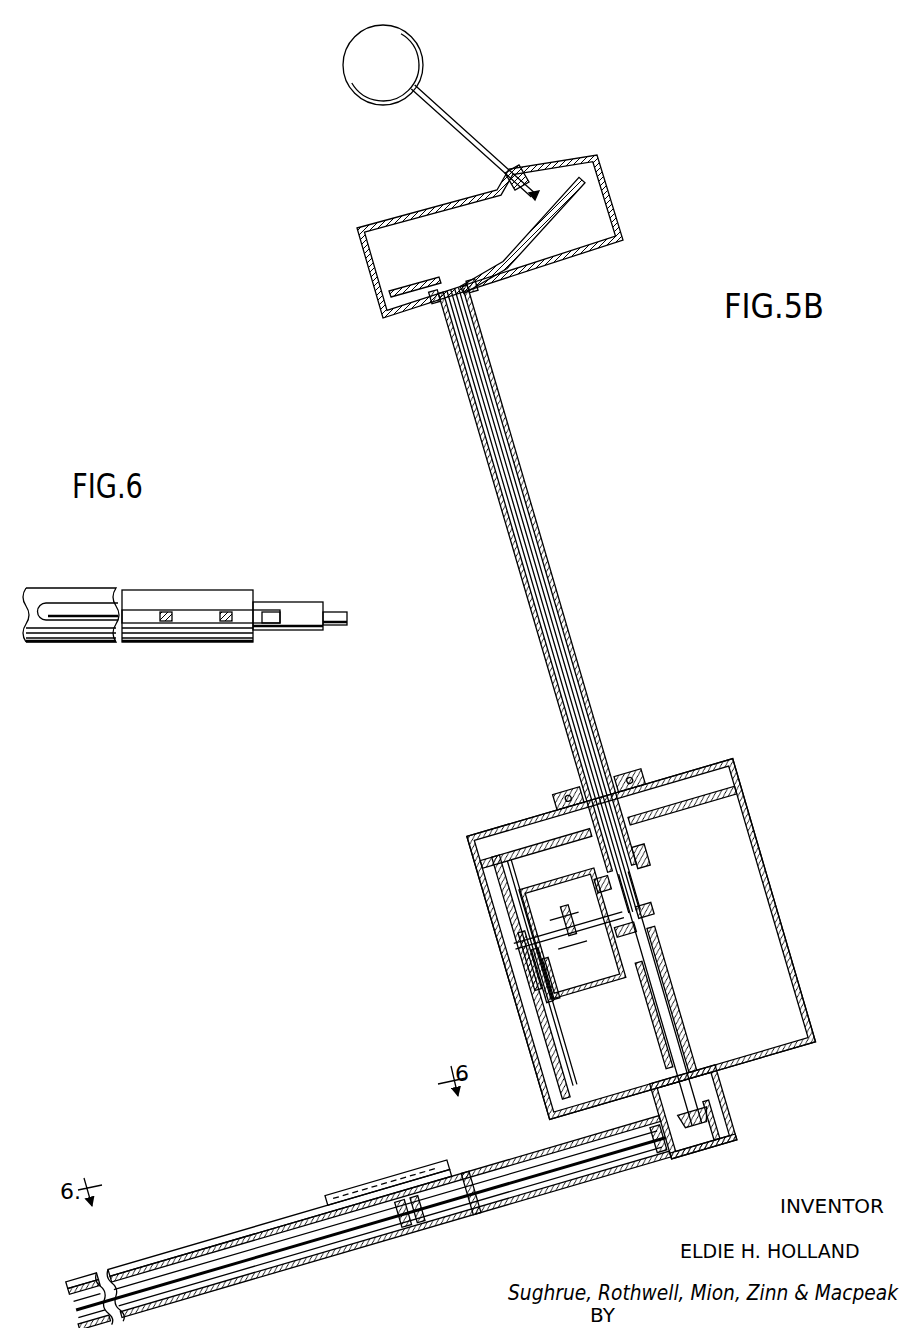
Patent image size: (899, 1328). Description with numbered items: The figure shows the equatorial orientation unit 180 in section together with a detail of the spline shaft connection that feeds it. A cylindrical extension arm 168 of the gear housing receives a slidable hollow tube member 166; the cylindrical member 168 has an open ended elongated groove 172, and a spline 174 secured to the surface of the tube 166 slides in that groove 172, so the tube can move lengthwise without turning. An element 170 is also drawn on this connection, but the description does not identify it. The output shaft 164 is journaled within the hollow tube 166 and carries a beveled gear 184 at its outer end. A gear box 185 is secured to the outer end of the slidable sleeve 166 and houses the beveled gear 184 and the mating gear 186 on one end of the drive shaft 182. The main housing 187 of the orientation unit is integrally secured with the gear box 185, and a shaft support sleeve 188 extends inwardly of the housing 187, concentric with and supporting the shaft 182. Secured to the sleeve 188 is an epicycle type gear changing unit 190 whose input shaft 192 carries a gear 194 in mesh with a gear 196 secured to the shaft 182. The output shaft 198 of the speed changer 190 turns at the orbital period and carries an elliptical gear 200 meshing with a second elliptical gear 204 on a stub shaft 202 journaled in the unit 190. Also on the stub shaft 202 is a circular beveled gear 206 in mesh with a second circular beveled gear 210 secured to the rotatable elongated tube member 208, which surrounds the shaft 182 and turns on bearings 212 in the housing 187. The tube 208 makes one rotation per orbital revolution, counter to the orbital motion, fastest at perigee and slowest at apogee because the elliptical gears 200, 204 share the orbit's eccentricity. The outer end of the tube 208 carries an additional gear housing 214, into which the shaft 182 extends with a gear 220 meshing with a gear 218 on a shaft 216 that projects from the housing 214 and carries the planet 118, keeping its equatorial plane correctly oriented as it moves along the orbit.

In FIG. 5B, the planet 118 is at (346, 74).
In FIG. 5B, the shaft 216 is at (466, 132).
In FIG. 5B, the additional gear housing 214 is at (366, 281).
In FIG. 5B, the gear 218 is at (548, 238).
In FIG. 5B, the gear 220 is at (405, 284).
In FIG. 5B, the rotatable elongated tube member 208 is at (534, 526).
In FIG. 5B, the drive shaft 182 is at (556, 601).
In FIG. 5B, the equatorial orientation unit 180 is at (477, 908).
In FIG. 5B, the main housing 187 is at (783, 913).
In FIG. 5B, the bearings 212 is at (638, 781).
In FIG. 5B, the second circular beveled gear 210 is at (648, 824).
In FIG. 5B, the circular beveled gear 206 is at (560, 1067).
In FIG. 5B, the epicycle type gear changing unit 190 is at (591, 1003).
In FIG. 5B, the stub shaft 202 is at (552, 967).
In FIG. 5B, the output shaft 198 is at (538, 934).
In FIG. 5B, the elliptical gear 200 is at (545, 968).
In FIG. 5B, the second elliptical gear 204 is at (548, 990).
In FIG. 5B, the gear 194 is at (631, 905).
In FIG. 5B, the gear 196 is at (666, 928).
In FIG. 5B, the input shaft 192 is at (640, 953).
In FIG. 5B, the shaft support sleeve 188 is at (684, 1014).
In FIG. 5B, the gear 186 is at (700, 1104).
In FIG. 5B, the beveled gear 184 is at (718, 1125).
In FIG. 5B, the gear box 185 is at (700, 1150).
In FIG. 5B, the cylindrical extension arm 168 is at (268, 1285).
In FIG. 6, the cylindrical extension arm 168 is at (203, 590).
In FIG. 5B, the hollow tube member 166 is at (462, 1217).
In FIG. 6, the hollow tube member 166 is at (298, 631).
In FIG. 5B, the output shaft 164 is at (314, 1226).
In FIG. 6, the output shaft 164 is at (332, 612).
In FIG. 5B, the open ended elongated groove 172 is at (224, 1233).
In FIG. 6, the open ended elongated groove 172 is at (143, 612).
In FIG. 5B, the spline 174 is at (447, 1163).
In FIG. 6, the spline 174 is at (275, 612).
In FIG. 5B, the coupling 170 is at (384, 1233).